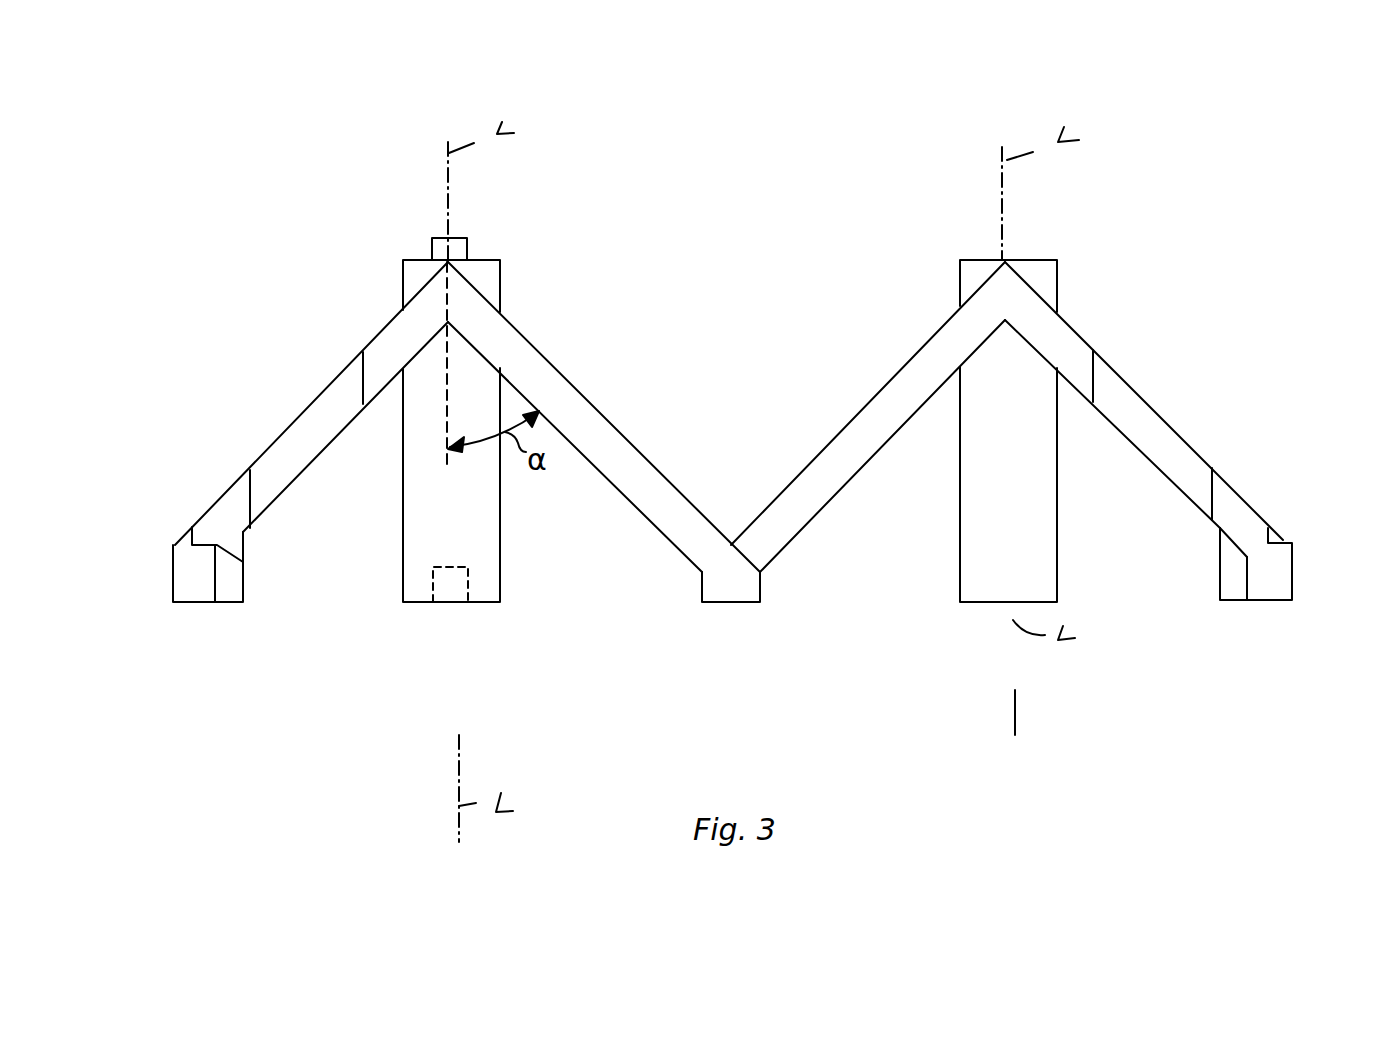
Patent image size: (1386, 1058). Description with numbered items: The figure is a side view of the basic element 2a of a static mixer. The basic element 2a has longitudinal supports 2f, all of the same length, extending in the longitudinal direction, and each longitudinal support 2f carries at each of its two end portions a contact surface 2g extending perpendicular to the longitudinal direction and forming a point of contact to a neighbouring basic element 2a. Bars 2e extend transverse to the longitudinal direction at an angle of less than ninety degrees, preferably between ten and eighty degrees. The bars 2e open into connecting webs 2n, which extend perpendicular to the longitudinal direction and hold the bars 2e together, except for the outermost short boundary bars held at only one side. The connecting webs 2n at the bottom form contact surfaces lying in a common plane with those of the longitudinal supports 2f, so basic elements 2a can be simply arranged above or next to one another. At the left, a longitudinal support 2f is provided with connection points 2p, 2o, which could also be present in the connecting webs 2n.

The basic element 2a is at (987, 115).
The bars 2e is at (305, 425).
The longitudinal support 2f is at (485, 513).
The contact surface 2g is at (478, 261).
The connecting web 2n is at (455, 292).
The connection point 2o is at (470, 585).
The connection point 2p is at (430, 235).